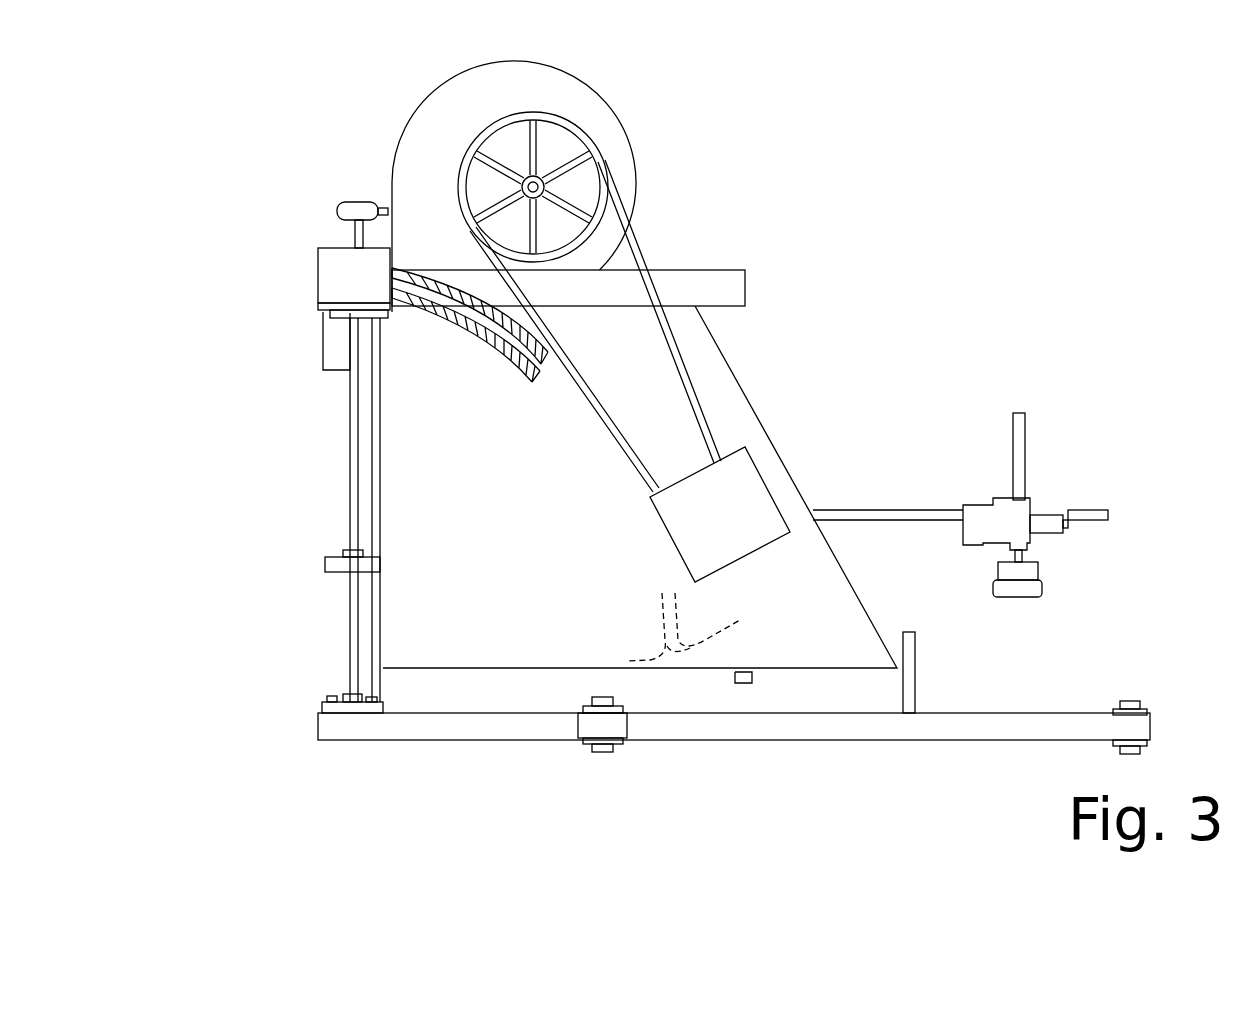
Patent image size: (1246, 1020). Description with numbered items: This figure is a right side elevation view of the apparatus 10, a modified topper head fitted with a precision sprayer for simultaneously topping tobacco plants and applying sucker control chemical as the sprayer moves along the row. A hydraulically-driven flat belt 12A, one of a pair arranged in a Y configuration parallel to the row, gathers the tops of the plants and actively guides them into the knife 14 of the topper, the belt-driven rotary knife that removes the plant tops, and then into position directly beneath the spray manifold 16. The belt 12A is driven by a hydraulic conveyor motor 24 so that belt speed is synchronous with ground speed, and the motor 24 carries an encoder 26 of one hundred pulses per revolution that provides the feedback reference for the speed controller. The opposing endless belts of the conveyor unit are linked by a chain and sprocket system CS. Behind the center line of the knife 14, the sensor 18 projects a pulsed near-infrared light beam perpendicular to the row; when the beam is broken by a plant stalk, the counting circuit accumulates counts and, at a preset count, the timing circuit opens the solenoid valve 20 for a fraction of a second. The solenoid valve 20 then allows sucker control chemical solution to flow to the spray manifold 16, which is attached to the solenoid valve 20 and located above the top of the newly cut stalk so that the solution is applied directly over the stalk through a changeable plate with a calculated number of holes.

The apparatus 10 is at (866, 217).
The flat belt 12A is at (355, 718).
The knife 14 is at (647, 638).
The spray manifold 16 is at (1053, 598).
The sensor 18 is at (742, 683).
The solenoid valve 20 is at (1007, 507).
The hydraulic conveyor motor 24 is at (330, 338).
The encoder 26 is at (337, 205).
The chain and sprocket system CS is at (294, 285).